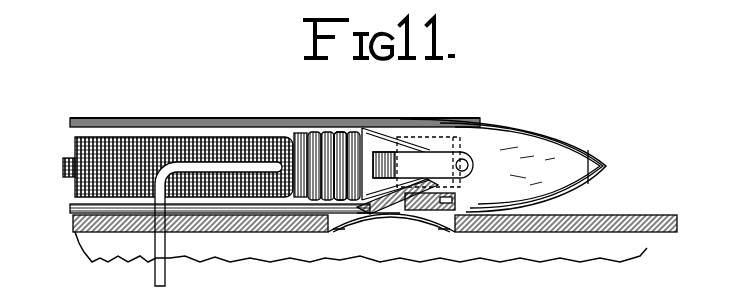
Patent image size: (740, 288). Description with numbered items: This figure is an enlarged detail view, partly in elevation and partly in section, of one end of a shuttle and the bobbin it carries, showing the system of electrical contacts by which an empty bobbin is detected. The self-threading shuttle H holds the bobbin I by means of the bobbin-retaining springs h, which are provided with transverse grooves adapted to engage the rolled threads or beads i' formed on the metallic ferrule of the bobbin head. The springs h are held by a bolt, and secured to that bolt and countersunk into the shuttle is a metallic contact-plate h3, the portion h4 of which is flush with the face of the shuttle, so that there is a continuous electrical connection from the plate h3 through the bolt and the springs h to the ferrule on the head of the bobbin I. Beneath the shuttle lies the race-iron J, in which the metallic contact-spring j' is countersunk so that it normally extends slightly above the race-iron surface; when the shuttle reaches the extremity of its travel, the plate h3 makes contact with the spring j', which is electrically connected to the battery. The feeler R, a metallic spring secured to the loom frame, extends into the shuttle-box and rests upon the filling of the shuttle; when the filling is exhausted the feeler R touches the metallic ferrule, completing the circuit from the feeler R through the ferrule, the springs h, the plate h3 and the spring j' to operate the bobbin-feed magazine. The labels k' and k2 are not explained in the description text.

The feeler R is at (193, 160).
The bobbin I is at (304, 140).
The spring k' is at (334, 143).
The formed threads or beads i' is at (352, 143).
The bobbin-retaining springs h is at (374, 134).
The rod end k2 is at (458, 140).
The self-threading shuttle H is at (498, 128).
The race-iron J is at (373, 233).
The contact-spring j' is at (378, 238).
The portion of contact-plate h4 is at (385, 216).
The metallic contact-plate h3 is at (427, 214).